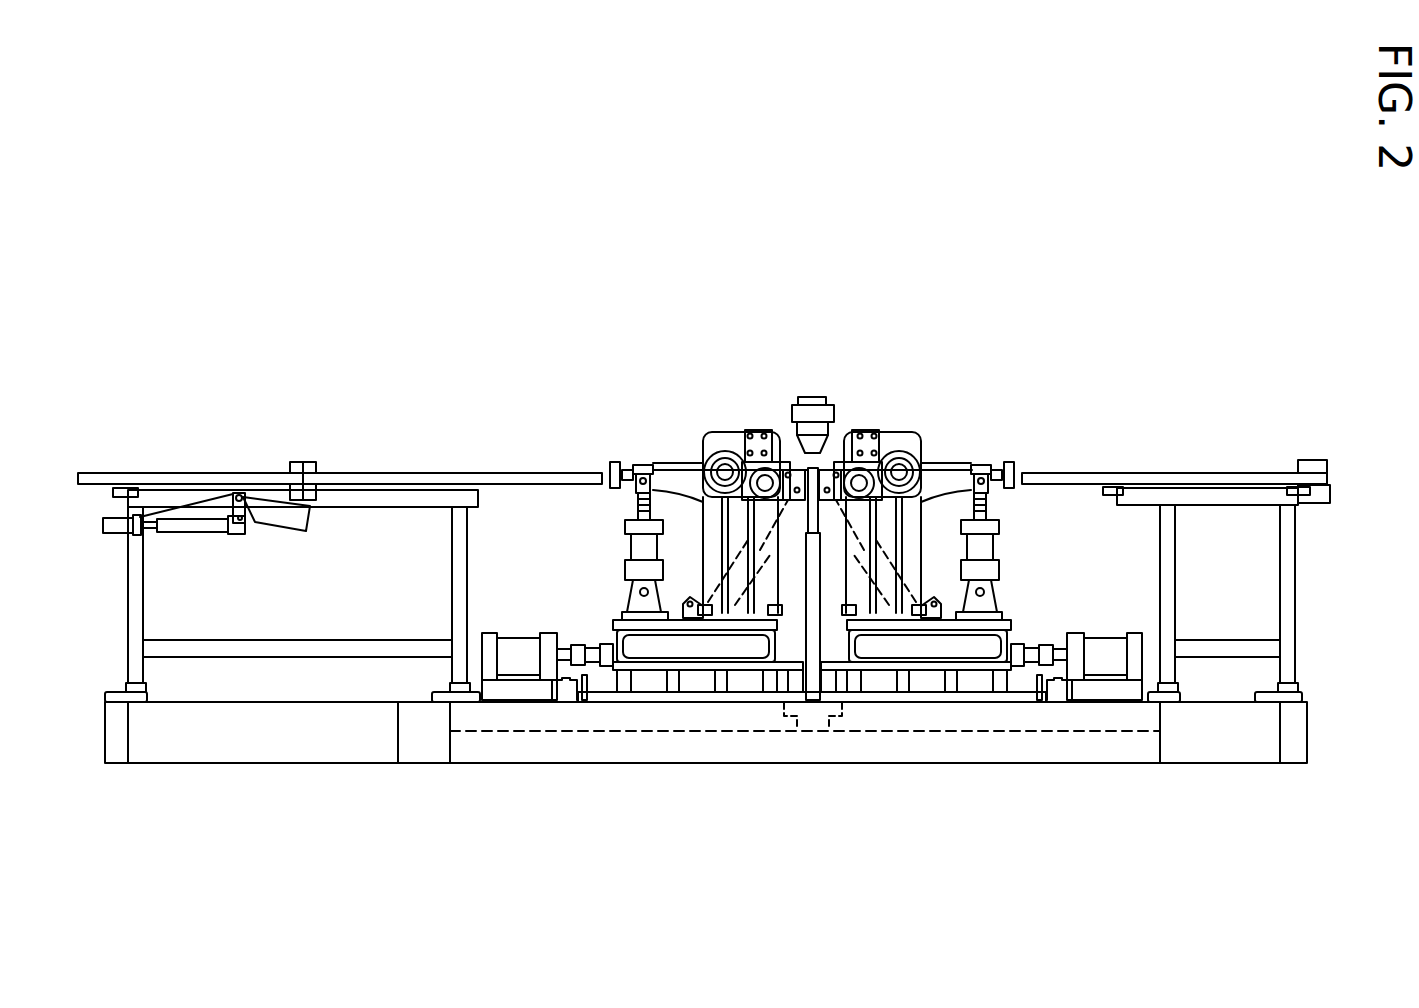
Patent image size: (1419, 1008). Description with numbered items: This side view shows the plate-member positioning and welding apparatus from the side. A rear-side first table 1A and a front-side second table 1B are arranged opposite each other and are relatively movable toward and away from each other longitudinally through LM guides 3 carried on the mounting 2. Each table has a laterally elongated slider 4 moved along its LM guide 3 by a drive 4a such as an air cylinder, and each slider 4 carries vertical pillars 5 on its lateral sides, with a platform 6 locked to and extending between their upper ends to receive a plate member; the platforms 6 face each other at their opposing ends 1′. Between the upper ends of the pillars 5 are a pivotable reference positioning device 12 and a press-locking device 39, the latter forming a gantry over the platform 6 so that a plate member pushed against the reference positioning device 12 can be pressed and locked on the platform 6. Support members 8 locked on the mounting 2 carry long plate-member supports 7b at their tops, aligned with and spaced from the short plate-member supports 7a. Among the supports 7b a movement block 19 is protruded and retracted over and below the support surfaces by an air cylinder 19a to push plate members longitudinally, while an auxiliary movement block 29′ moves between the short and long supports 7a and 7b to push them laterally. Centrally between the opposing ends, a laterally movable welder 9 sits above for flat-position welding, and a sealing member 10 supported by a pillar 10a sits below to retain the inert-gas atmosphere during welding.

The first table 1A is at (672, 438).
The second table 1B is at (953, 435).
The opposing ends of the platforms 1′ is at (790, 463).
The mounting 2 is at (573, 763).
The linear motion (LM) guide 3 is at (668, 693).
The slider 4 is at (650, 640).
The drive 4a is at (515, 647).
The pillar 5 is at (712, 514).
The platform 6 is at (763, 472).
The short plate-member support 7a is at (634, 466).
The long plate-member support 7b is at (384, 473).
The support member 8 is at (133, 586).
The welder 9 is at (829, 400).
The sealing member 10 is at (806, 466).
The pillar 10a is at (823, 703).
The reference positioning device 12 is at (787, 503).
The movement block 19 is at (312, 470).
The air cylinder 19a is at (207, 523).
The auxiliary movement block 29′ is at (612, 465).
The press-locking device 39 is at (752, 432).